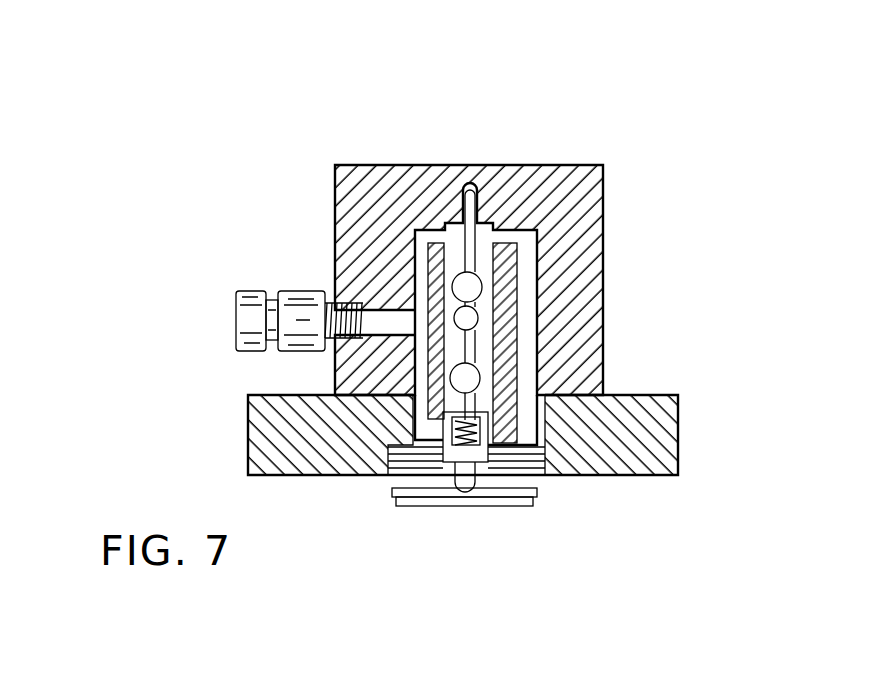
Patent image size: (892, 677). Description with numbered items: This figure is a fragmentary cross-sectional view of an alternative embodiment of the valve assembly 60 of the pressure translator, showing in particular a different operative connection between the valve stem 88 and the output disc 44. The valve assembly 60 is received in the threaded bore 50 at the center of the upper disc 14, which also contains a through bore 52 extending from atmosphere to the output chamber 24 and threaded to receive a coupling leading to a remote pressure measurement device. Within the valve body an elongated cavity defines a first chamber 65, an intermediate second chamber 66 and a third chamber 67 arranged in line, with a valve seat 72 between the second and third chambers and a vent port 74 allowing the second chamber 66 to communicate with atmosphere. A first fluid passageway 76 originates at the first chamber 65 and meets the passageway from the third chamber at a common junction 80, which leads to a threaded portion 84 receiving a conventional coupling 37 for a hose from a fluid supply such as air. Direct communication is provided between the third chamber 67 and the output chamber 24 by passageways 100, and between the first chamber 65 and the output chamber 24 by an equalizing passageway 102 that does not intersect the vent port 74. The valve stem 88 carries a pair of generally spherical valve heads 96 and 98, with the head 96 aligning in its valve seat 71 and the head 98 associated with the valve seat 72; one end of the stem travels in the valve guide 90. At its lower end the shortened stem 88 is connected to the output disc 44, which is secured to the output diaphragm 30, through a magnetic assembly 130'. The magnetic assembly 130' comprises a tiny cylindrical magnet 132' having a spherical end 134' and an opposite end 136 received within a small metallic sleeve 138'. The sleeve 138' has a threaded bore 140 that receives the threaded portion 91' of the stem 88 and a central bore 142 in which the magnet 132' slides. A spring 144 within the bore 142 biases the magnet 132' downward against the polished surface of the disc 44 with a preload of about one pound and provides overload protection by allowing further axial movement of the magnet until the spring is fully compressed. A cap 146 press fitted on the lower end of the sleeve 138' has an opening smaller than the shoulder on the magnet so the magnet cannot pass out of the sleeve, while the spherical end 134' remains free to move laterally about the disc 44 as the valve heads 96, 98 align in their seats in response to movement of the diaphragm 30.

The upper disc 14 is at (683, 398).
The output chamber 24 is at (343, 562).
The output diaphragm 30 is at (537, 504).
The coupling 37 is at (305, 293).
The output disc 44 is at (537, 500).
The bore 50 is at (560, 440).
The through bore 52 is at (370, 308).
The valve assembly 60 is at (497, 104).
The first chamber 65 is at (602, 184).
The second chamber 66 is at (481, 323).
The third chamber 67 is at (449, 385).
The valve seat 71 is at (447, 270).
The valve seat 72 is at (447, 367).
The vent port 74 is at (485, 292).
The first fluid passageway 76 is at (413, 250).
The common junction 80 is at (418, 306).
The threaded portion 84 is at (331, 355).
The valve stem 88 is at (515, 215).
The valve guide 90 is at (480, 190).
The threaded portion 91' is at (376, 416).
The valve head 96 is at (483, 262).
The valve head 98 is at (482, 373).
The passageways 100 is at (418, 437).
The equalizing passageway 102 is at (487, 342).
The magnetic assembly 130' is at (452, 534).
The cylindrical magnet 132' is at (506, 531).
The spherical end 134' is at (453, 523).
The end of the magnet 136 is at (490, 450).
The metallic sleeve 138' is at (364, 440).
The threaded bore 140 is at (489, 413).
The central bore 142 is at (443, 432).
The spring 144 is at (490, 433).
The cap 146 is at (495, 462).